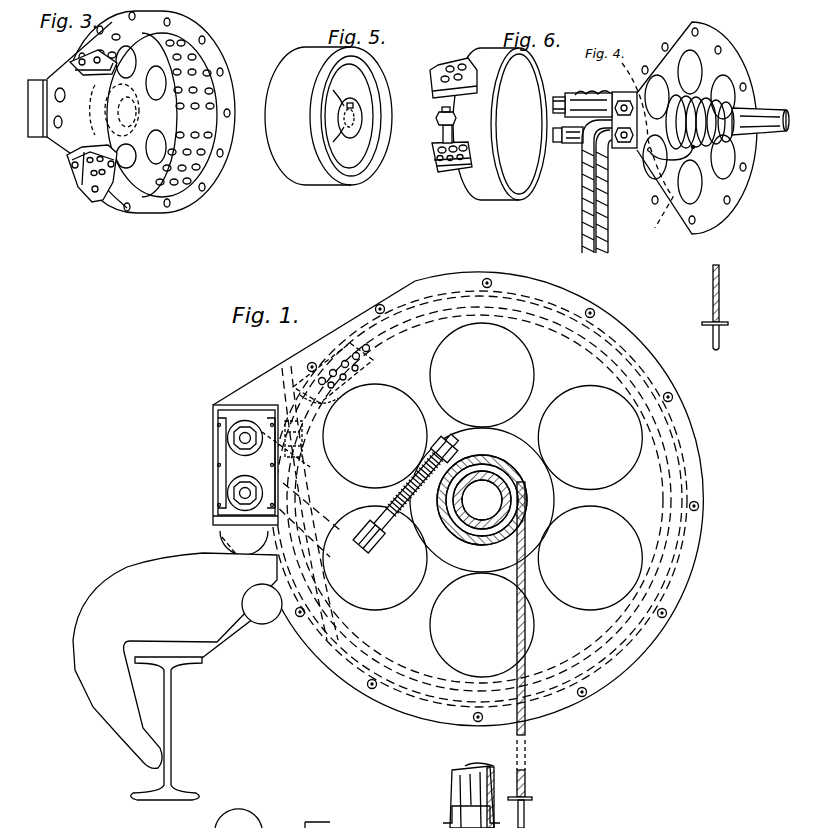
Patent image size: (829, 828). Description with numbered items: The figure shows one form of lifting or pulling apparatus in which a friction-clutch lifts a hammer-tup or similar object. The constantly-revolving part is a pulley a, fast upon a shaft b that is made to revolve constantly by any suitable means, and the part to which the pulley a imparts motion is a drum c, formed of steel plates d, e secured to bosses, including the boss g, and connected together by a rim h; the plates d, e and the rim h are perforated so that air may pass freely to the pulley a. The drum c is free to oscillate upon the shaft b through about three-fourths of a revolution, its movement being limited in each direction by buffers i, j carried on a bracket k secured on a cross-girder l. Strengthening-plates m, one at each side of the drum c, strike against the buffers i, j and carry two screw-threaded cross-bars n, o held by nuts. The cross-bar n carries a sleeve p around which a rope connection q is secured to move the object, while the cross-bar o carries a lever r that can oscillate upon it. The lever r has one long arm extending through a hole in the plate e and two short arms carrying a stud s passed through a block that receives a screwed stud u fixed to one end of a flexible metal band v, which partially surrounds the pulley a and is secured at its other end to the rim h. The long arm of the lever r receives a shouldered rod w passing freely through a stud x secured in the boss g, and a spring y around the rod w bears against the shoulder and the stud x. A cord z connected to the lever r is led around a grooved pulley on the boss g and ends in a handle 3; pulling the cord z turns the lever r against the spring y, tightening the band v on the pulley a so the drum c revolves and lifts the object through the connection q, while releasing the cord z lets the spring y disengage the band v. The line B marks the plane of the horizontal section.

In FIG. 5, the pulley a is at (328, 116).
In FIG. 1, the pulley a is at (348, 438).
In FIG. 4, the shaft b is at (719, 127).
In FIG. 1, the shaft b is at (478, 641).
In FIG. 3, the drum c is at (153, 112).
In FIG. 1, the drum c is at (702, 472).
In FIG. 3, the steel plate d is at (87, 115).
In FIG. 4, the steel plate e is at (697, 128).
In FIG. 1, the steel plate e is at (482, 500).
In FIG. 1, the boss g is at (482, 500).
In FIG. 3, the rim h is at (103, 203).
In FIG. 1, the rim h is at (668, 424).
In FIG. 1, the buffer i is at (262, 604).
In FIG. 1, the buffer j is at (244, 560).
In FIG. 1, the bracket k is at (175, 660).
In FIG. 1, the cross-girder l is at (166, 728).
In FIG. 3, the strengthening-plate m is at (35, 97).
In FIG. 4, the strengthening-plate m is at (608, 92).
In FIG. 4, the cross-bar n is at (556, 150).
In FIG. 4, the cross-bar o is at (551, 80).
In FIG. 1, the cross-bar o is at (228, 438).
In FIG. 4, the sleeve p is at (573, 148).
In FIG. 1, the sleeve p is at (228, 481).
In FIG. 4, the connection q is at (599, 186).
In FIG. 4, the lever r is at (578, 91).
In FIG. 1, the lever r is at (363, 536).
In FIG. 1, the stud s is at (266, 381).
In FIG. 6, the screwed stud u is at (453, 127).
In FIG. 1, the screwed stud u is at (303, 489).
In FIG. 6, the flexible metal band v is at (488, 124).
In FIG. 1, the flexible metal band v is at (365, 325).
In FIG. 1, the rod w is at (438, 440).
In FIG. 1, the stud x is at (470, 438).
In FIG. 1, the spring y is at (430, 470).
In FIG. 1, the cord z is at (619, 546).
In FIG. 1, the handle 3 is at (630, 580).
In FIG. 1, the line B B is at (180, 492).